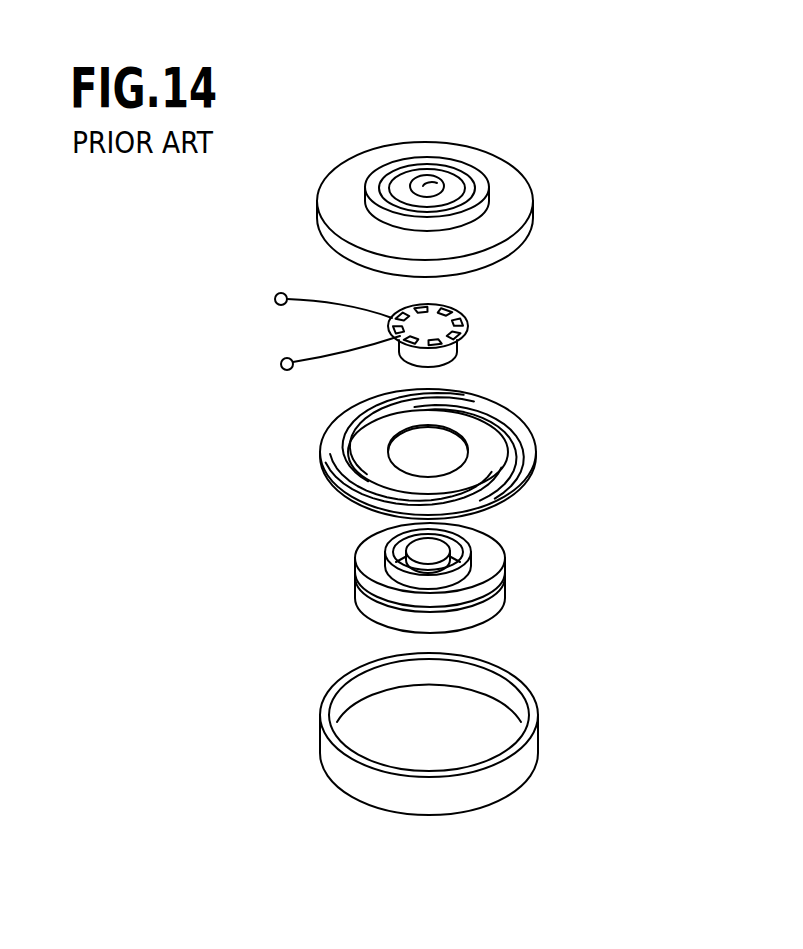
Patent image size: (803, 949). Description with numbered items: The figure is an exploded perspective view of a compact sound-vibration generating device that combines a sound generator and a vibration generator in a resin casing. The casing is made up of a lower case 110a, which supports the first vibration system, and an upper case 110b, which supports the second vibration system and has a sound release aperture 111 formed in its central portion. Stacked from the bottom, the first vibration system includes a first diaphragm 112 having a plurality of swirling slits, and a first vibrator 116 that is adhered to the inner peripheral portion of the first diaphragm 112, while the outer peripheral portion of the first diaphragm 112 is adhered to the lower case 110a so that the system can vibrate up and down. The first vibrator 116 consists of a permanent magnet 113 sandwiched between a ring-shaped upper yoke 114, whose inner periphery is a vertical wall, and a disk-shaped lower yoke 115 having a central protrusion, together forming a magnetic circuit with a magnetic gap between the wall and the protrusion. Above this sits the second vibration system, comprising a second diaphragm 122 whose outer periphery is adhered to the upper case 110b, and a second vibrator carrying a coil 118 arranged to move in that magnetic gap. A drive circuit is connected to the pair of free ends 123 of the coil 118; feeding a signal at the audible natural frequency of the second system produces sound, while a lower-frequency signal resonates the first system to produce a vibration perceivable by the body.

The upper case 110b is at (508, 200).
The sound release aperture 111 is at (436, 182).
The second diaphragm 122 is at (466, 318).
The coil 118 is at (452, 366).
The free ends of the coil 123 is at (278, 295).
The first diaphragm 112 is at (490, 404).
The first vibrator 116 is at (504, 581).
The upper yoke 114 is at (487, 557).
The permanent magnet 113 is at (497, 598).
The lower yoke 115 is at (482, 624).
The lower case 110a is at (532, 742).